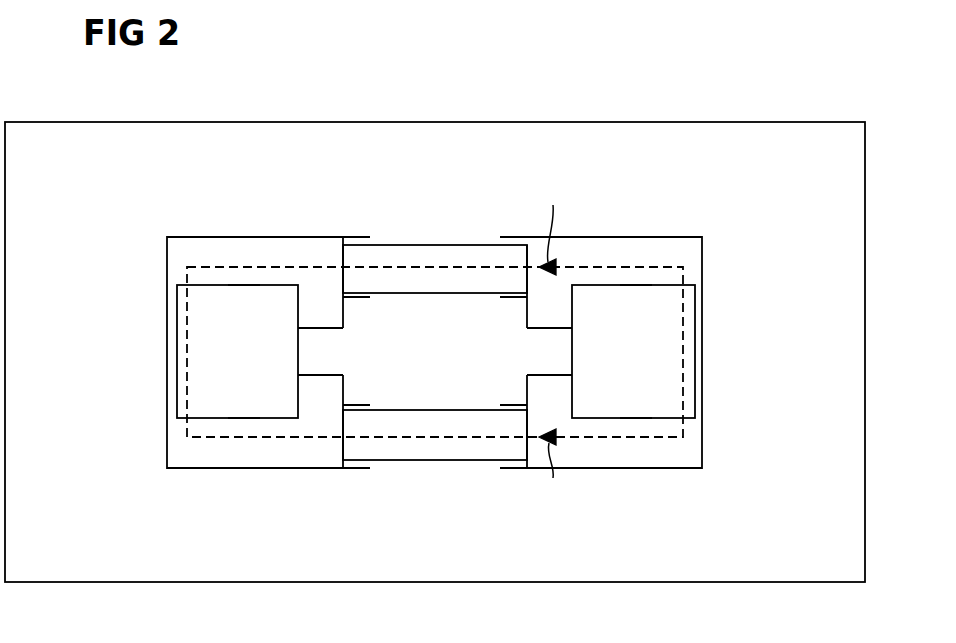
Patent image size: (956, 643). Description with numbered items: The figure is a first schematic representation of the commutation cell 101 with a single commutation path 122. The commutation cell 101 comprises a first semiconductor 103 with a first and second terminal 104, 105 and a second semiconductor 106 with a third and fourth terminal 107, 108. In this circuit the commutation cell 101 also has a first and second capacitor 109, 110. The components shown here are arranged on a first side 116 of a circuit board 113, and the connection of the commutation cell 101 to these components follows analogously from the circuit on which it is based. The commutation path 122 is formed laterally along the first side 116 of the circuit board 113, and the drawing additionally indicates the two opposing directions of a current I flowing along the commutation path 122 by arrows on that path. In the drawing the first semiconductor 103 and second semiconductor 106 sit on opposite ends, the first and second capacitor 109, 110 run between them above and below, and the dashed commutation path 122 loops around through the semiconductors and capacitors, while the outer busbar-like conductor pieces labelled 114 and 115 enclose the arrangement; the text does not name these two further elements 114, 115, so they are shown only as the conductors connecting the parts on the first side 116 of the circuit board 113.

The commutation cell 101 is at (391, 92).
The first semiconductor 103 is at (205, 357).
The first terminal 104 is at (242, 420).
The second terminal 105 is at (242, 276).
The second semiconductor 106 is at (672, 352).
The third terminal 107 is at (633, 418).
The fourth terminal 108 is at (634, 285).
The first capacitor 109 is at (434, 446).
The second capacitor 110 is at (434, 245).
The circuit board 113 is at (738, 132).
The first busbar 114 is at (180, 252).
The second busbar 115 is at (702, 248).
The first side 116 is at (435, 352).
The commutation path 122 is at (485, 267).